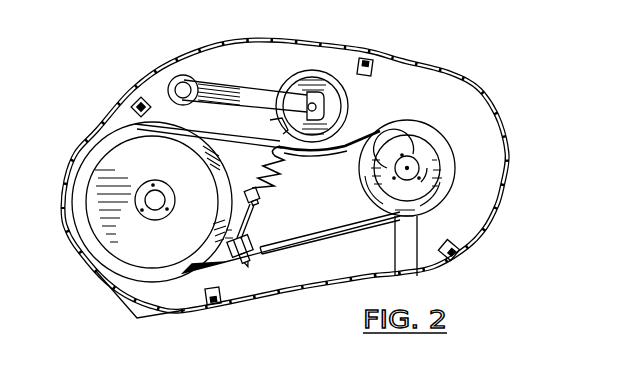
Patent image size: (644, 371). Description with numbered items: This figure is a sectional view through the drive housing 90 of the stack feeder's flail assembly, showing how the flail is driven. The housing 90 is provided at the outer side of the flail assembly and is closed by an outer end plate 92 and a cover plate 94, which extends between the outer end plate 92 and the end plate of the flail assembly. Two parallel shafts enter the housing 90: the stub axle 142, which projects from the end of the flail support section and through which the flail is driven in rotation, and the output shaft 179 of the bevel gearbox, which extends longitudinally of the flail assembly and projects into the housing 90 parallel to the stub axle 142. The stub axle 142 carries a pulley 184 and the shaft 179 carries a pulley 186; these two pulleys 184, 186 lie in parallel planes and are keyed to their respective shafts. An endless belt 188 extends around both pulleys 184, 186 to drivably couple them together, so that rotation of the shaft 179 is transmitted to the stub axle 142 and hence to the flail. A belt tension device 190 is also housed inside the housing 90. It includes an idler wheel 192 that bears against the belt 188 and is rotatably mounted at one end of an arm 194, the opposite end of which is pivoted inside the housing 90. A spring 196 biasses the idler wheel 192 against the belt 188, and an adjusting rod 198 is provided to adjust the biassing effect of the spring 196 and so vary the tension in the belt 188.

The housing 90 is at (518, 204).
The outer end plate 92 is at (465, 102).
The cover plate 94 is at (508, 150).
The stub axle 142 is at (155, 192).
The output shaft 179 is at (407, 166).
The pulley 184 is at (115, 258).
The pulley 186 is at (452, 168).
The endless belt 188 is at (358, 228).
The belt tension device 190 is at (227, 76).
The idler wheel 192 is at (273, 122).
The arm 194 is at (257, 102).
The spring 196 is at (280, 168).
The adjusting rod 198 is at (255, 216).